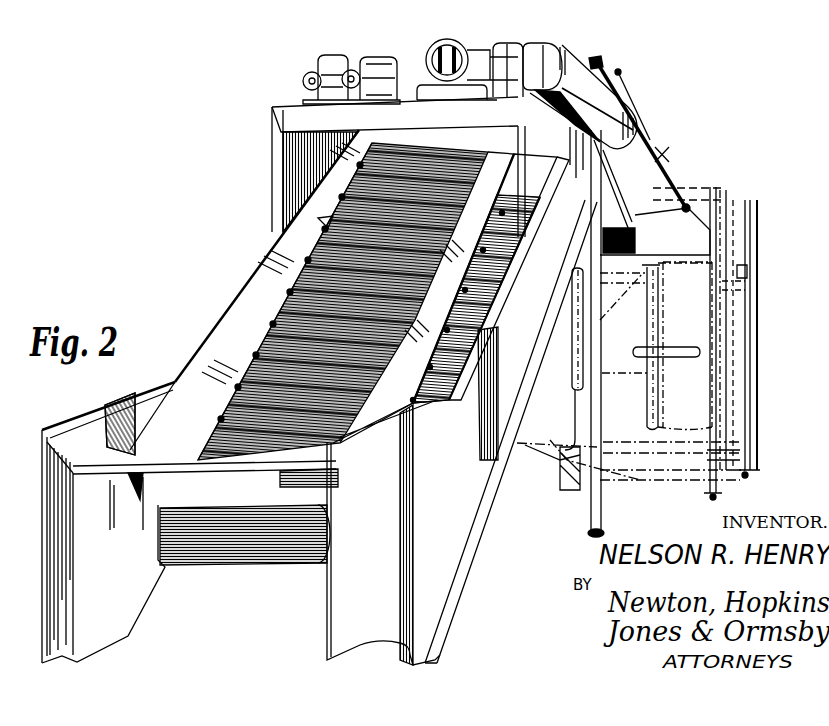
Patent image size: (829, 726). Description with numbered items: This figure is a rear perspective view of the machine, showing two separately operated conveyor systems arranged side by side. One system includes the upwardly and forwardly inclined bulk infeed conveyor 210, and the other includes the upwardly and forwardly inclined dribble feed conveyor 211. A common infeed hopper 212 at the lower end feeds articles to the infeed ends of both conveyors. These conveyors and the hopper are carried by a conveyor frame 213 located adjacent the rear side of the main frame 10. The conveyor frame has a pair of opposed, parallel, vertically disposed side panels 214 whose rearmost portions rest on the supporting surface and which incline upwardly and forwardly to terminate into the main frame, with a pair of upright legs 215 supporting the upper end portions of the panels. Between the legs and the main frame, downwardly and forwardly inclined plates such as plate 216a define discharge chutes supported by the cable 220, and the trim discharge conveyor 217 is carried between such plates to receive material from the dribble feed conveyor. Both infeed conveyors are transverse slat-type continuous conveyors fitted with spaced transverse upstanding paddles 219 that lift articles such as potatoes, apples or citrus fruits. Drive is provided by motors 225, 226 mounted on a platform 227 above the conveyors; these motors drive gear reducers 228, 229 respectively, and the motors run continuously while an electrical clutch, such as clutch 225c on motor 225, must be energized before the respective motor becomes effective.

The main frame 10 is at (755, 361).
The bulk infeed conveyor 210 is at (290, 301).
The dribble feed conveyor 211 is at (489, 322).
The infeed hopper 212 is at (310, 478).
The conveyor frame 213 is at (443, 578).
The side panels 214 is at (214, 348).
The upright legs 215 is at (588, 509).
The inclined plate 216a is at (660, 154).
The trim discharge conveyor 217 is at (622, 235).
The transverse upstanding paddles 219 is at (330, 218).
The cable 220 is at (643, 130).
The motor 225 is at (360, 58).
The clutch 225c is at (347, 67).
The motor 226 is at (457, 35).
The platform 227 is at (272, 136).
The gear reducer 228 is at (311, 59).
The gear reducer 229 is at (514, 36).